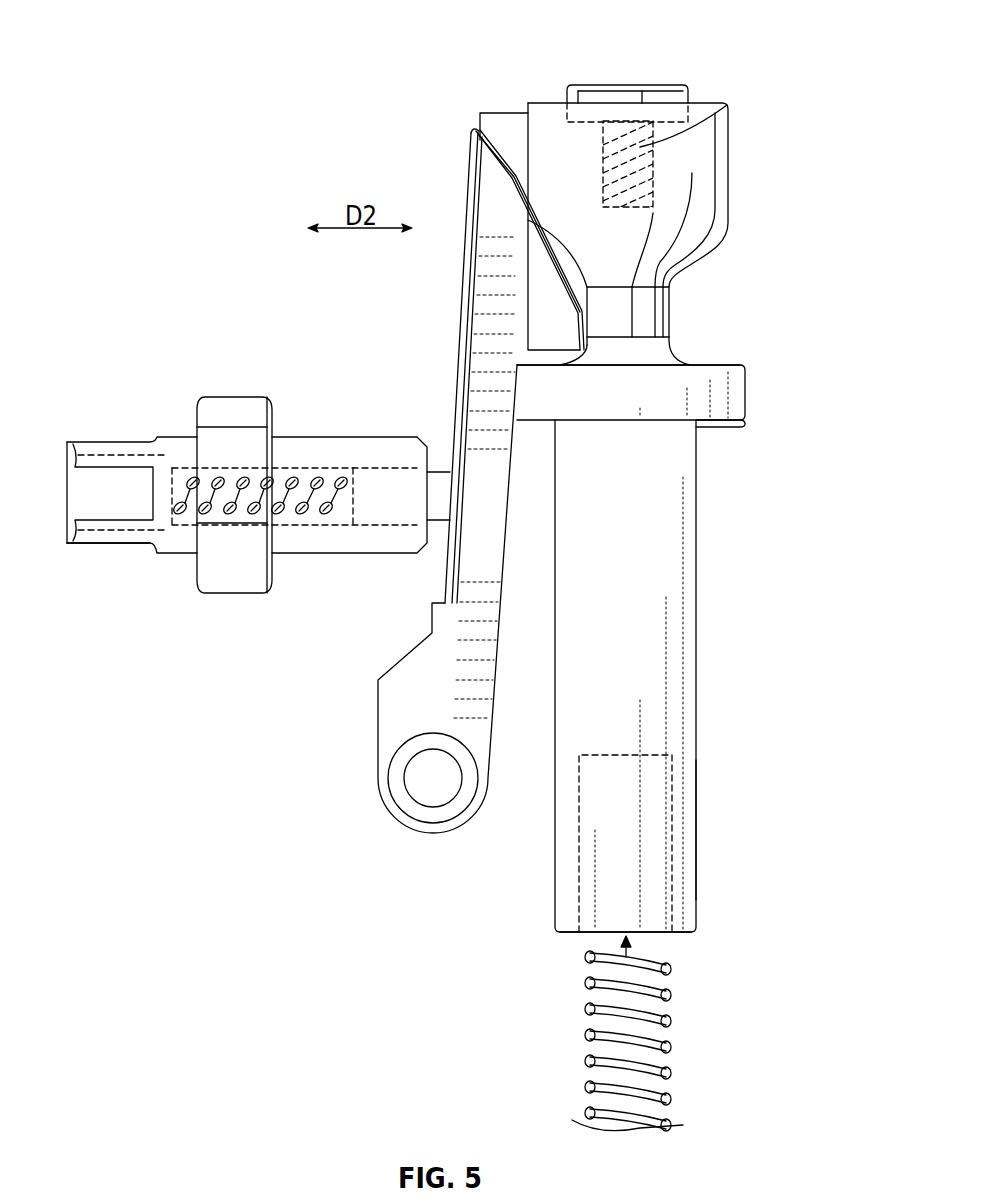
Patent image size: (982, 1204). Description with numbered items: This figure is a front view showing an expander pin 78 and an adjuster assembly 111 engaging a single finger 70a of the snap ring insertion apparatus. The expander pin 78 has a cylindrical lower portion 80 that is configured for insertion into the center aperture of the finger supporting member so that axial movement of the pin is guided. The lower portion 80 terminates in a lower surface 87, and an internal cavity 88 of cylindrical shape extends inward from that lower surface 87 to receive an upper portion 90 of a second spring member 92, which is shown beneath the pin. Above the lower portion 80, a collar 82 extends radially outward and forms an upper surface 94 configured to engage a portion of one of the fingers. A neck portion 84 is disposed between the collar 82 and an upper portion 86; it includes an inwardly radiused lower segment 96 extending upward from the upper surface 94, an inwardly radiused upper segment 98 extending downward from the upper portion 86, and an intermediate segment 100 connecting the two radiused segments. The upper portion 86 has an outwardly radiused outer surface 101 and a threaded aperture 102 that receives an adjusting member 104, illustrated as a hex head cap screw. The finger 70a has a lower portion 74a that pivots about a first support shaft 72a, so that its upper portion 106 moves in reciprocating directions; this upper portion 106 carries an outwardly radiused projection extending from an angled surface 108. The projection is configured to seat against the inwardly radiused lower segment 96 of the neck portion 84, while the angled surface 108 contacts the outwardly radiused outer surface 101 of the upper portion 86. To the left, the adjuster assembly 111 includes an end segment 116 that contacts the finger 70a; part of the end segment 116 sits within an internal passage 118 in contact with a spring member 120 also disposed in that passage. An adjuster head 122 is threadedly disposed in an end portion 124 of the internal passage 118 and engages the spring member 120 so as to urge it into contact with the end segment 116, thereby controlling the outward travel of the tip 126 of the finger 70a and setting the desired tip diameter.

The adjusting member 104 is at (630, 85).
The threaded aperture 102 is at (728, 105).
The upper portion 86 is at (729, 158).
The outwardly radiused outer surface 101 is at (729, 204).
The inwardly radiused upper segment 98 is at (672, 270).
The intermediate segment 100 is at (670, 297).
The neck portion 84 is at (670, 318).
The inwardly radiused lower segment 96 is at (672, 348).
The upper surface 94 is at (735, 364).
The collar 82 is at (746, 408).
The tip 126 is at (468, 142).
The upper portion 106 is at (464, 190).
The angled surface 108 is at (528, 218).
The finger 70a is at (458, 324).
The lower portion 74a is at (378, 740).
The first support shaft 72a is at (432, 797).
The end segment 116 is at (428, 548).
The adjuster assembly 111 is at (133, 437).
The end portion 124 is at (75, 442).
The adjuster head 122 is at (100, 530).
The spring member 120 is at (290, 470).
The internal passage 118 is at (337, 513).
The expander pin 78 is at (698, 671).
The lower portion 80 is at (697, 808).
The internal cavity 88 is at (653, 848).
The lower surface 87 is at (676, 938).
The upper portion 90 is at (582, 998).
The second spring member 92 is at (671, 1058).